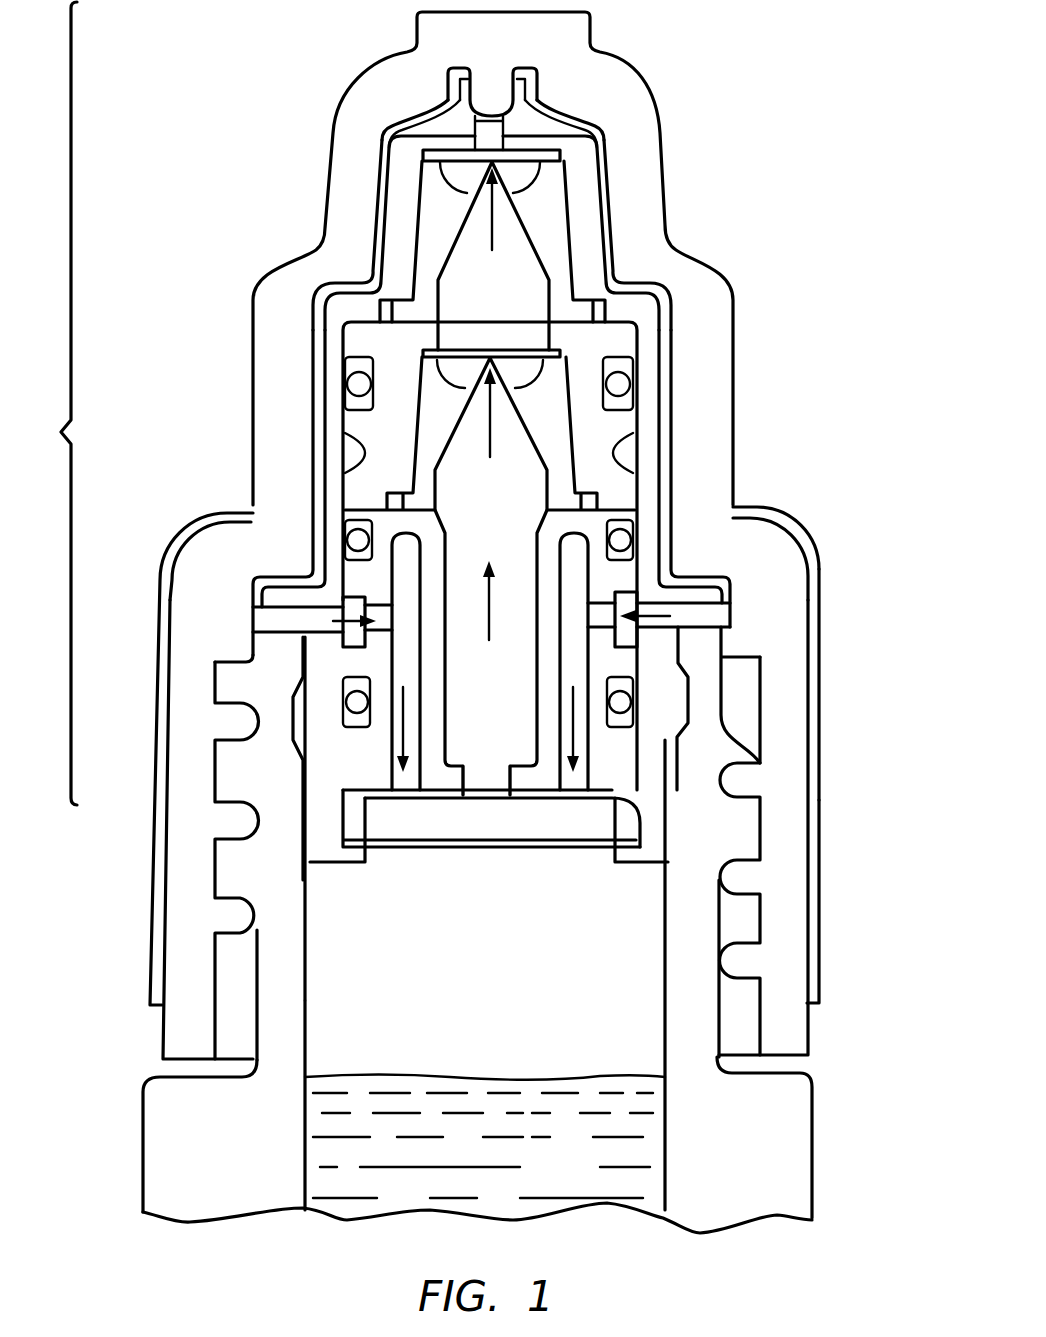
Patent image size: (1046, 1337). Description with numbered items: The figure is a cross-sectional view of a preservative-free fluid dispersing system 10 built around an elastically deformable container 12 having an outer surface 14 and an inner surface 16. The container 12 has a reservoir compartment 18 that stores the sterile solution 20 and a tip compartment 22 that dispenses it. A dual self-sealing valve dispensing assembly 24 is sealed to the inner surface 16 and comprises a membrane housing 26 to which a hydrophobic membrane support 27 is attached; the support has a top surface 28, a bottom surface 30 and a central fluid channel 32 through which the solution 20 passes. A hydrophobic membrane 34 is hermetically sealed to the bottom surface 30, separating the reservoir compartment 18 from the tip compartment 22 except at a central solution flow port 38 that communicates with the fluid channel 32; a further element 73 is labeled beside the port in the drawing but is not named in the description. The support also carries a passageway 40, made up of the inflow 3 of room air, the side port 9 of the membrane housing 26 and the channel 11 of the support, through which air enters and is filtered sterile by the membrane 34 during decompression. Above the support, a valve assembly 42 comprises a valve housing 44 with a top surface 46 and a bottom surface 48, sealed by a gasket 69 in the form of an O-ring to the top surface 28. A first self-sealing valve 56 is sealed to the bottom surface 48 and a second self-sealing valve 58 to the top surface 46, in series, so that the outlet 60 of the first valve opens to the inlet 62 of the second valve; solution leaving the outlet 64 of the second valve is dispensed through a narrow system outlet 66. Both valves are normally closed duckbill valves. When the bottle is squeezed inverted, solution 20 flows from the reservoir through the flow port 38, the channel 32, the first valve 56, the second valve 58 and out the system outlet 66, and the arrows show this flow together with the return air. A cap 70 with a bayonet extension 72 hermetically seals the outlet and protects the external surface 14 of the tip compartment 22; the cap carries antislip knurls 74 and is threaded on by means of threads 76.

The preservative-free fluid dispersing system 10 is at (806, 342).
The inflow of room air 3 is at (693, 632).
The side port 9 is at (270, 622).
The channel 11 is at (391, 676).
The container 12 is at (693, 922).
The outer surface 14 is at (717, 1024).
The inner surface 16 is at (662, 986).
The reservoir compartment 18 is at (408, 976).
The sterile solution 20 is at (485, 1137).
The tip compartment 22 is at (48, 403).
The dual self-sealing valve dispensing assembly 24 is at (545, 222).
The membrane housing 26 is at (632, 748).
The hydrophobic membrane support 27 is at (360, 755).
The top surface 28 is at (400, 505).
The bottom surface 30 is at (615, 803).
The central fluid channel 32 is at (520, 590).
The hydrophobic membrane 34 is at (364, 845).
The central solution flow port 38 is at (484, 773).
The passageway 40 is at (745, 612).
The valve assembly 42 is at (560, 426).
The valve housing 44 is at (593, 475).
The top surface 46 is at (666, 238).
The bottom surface 48 is at (733, 500).
The first self-sealing valve 56 is at (430, 430).
The second self-sealing valve 58 is at (433, 227).
The outlet of the first valve 60 is at (372, 338).
The inlet of the second valve 62 is at (510, 336).
The outlet of the second valve 64 is at (478, 136).
The system outlet 66 is at (507, 134).
The gasket 69 is at (620, 390).
The cap 70 is at (778, 878).
The bayonet extension 72 is at (497, 92).
The piston lower end 73 is at (507, 760).
The antislip knurls 74 is at (818, 967).
The threads 76 is at (228, 911).